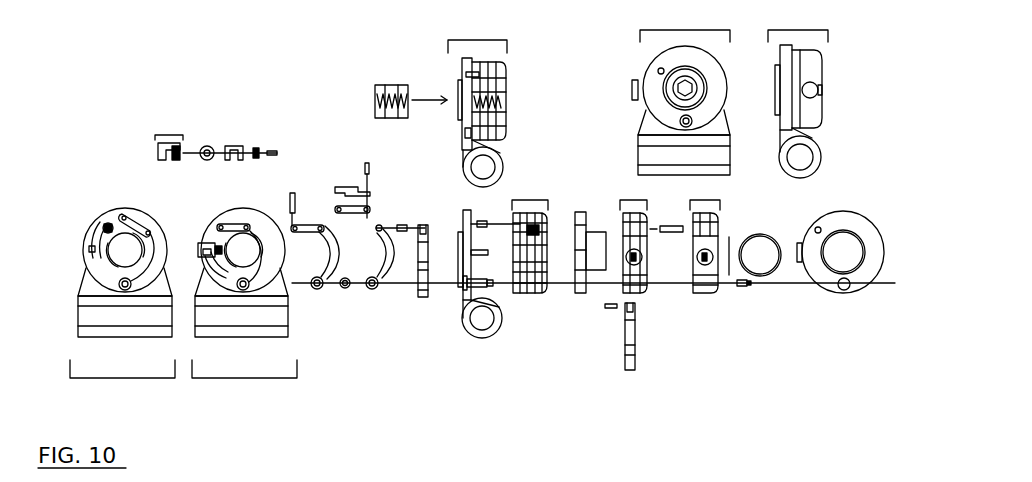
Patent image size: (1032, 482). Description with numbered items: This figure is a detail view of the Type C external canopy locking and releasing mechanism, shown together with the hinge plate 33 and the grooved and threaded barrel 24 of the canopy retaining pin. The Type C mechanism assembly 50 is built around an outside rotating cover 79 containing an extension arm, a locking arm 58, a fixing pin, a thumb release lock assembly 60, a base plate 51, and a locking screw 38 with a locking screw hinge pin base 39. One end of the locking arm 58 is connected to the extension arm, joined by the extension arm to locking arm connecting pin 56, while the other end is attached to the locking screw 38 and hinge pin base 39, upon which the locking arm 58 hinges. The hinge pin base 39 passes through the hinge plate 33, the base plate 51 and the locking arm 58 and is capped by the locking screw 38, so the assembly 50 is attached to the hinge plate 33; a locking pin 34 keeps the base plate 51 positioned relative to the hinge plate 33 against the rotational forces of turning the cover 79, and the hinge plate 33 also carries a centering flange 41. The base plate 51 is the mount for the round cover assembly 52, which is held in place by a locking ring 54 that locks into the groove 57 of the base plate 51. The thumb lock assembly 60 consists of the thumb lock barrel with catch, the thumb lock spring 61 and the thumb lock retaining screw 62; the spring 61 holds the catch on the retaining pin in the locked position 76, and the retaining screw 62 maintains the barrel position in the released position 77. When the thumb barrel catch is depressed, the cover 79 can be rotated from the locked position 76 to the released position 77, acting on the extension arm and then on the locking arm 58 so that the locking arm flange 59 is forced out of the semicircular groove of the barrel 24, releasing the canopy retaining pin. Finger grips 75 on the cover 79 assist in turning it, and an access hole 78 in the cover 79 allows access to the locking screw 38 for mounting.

The grooved and threaded barrel 24 is at (392, 84).
The hinge plate 33 is at (463, 216).
The locking pin 34 is at (484, 221).
The locking screw 38 is at (345, 289).
The locking screw hinge pin base 39 is at (482, 290).
The centering flange of hinge plate 41 is at (460, 265).
The Type C external locking and releasing mechanism assembled 50 is at (530, 200).
The Type C base plate 51 is at (580, 212).
The round cover assembly 52 is at (633, 200).
The locking ring 54 is at (756, 234).
The extension arm to locking arm connecting pin 56 is at (364, 172).
The groove for locking ring 57 is at (605, 232).
The locking arm 58 is at (322, 277).
The locking arm flange 59 is at (383, 250).
The thumb lock push button mechanism 60 is at (169, 134).
The thumb lock spring 61 is at (257, 146).
The thumb lock retaining screw 62 is at (275, 148).
The Type C cover finger grips 75 is at (836, 262).
The Type C external locking and releasing mechanism locked position 76 is at (235, 292).
The Type C external locking and releasing mechanism released position 77 is at (112, 293).
The Type C cover access hole 78 is at (845, 291).
The Type C cover 79 is at (858, 272).